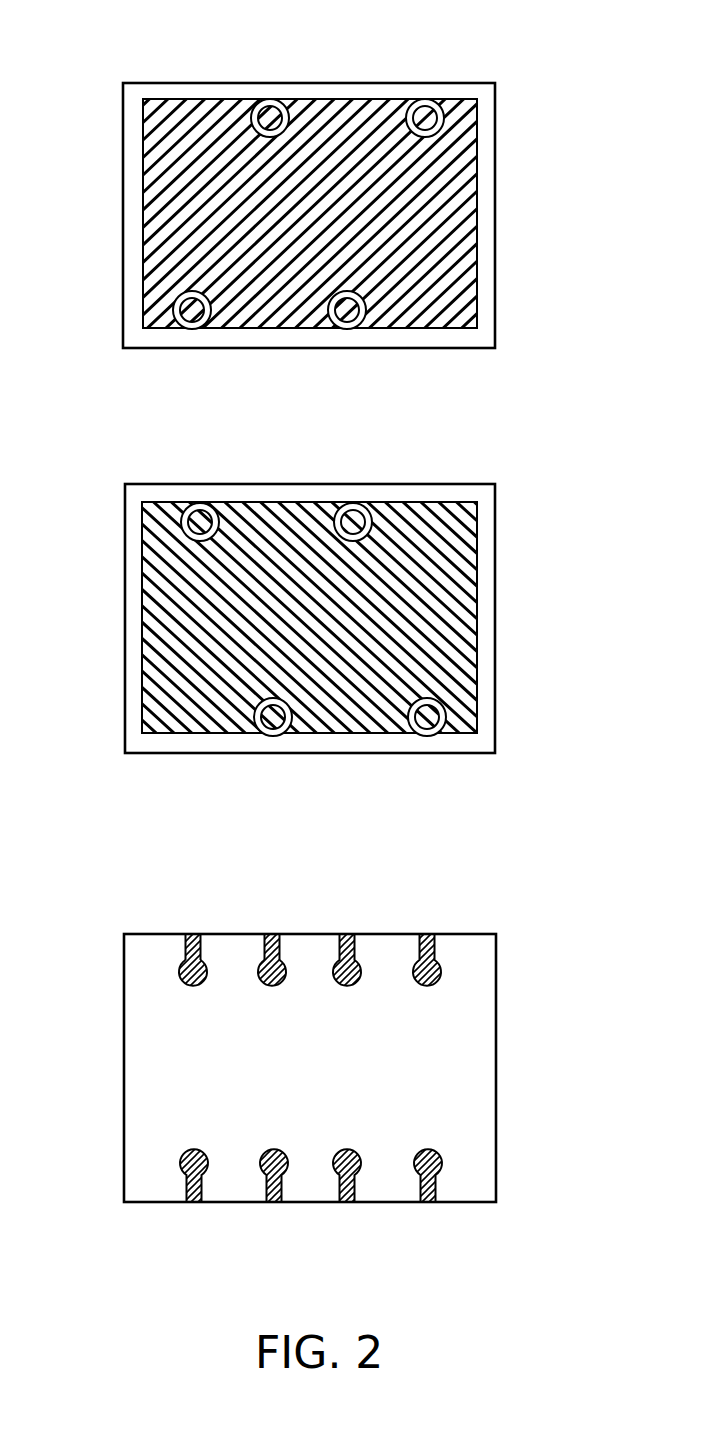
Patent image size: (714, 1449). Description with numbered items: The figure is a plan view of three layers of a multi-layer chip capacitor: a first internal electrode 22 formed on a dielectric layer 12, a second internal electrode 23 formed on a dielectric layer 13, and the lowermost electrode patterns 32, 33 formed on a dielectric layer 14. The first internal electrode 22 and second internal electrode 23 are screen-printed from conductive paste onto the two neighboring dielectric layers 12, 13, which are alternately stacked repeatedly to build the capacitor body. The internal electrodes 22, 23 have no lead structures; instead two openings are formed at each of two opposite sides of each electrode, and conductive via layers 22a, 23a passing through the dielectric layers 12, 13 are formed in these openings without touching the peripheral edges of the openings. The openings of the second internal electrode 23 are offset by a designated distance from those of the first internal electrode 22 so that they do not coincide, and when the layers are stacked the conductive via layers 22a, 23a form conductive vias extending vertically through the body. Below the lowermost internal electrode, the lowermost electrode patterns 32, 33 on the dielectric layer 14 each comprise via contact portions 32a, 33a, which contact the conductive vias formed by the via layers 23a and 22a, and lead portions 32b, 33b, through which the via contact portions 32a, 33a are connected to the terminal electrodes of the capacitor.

The dielectric layer 12 is at (487, 187).
The first internal electrode 22 is at (172, 239).
The conductive via layer 22a is at (270, 116).
The dielectric layer 13 is at (487, 633).
The second internal electrode 23 is at (158, 570).
The conductive via layer 23a is at (200, 506).
The dielectric layer 14 is at (467, 1064).
The lowermost electrode pattern 32 is at (301, 1050).
The via contact portion 32a is at (178, 968).
The lead portion 32b is at (181, 952).
The lowermost electrode pattern 33 is at (321, 1033).
The via contact portion 33a is at (285, 970).
The lead portion 33b is at (266, 957).